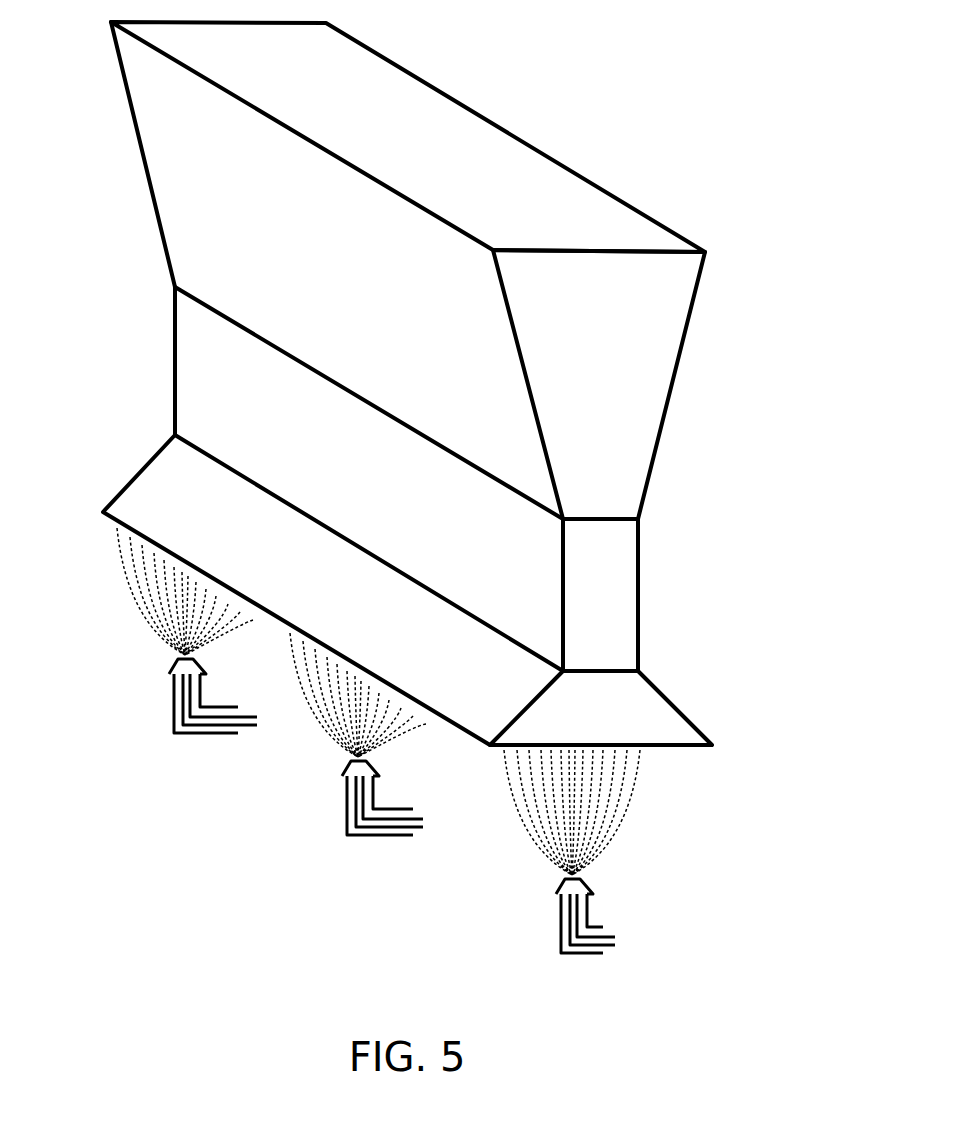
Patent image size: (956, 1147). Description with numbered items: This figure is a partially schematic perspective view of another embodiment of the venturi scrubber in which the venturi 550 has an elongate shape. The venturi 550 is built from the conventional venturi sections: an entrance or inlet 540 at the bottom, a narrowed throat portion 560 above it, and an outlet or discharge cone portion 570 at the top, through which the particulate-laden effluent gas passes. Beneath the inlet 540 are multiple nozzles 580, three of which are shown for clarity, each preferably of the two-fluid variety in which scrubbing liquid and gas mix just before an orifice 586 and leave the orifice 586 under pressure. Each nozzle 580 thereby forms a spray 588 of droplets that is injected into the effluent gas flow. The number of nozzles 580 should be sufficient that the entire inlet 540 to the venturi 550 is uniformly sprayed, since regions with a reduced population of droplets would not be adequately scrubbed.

The venturi 550 is at (155, 393).
The outlet or discharge cone portion 570 is at (672, 302).
The throat portion 560 is at (605, 571).
The inlet 540 is at (540, 714).
The two-fluid nozzle 580 is at (169, 674).
The orifice 586 is at (200, 654).
The spray 588 is at (135, 608).